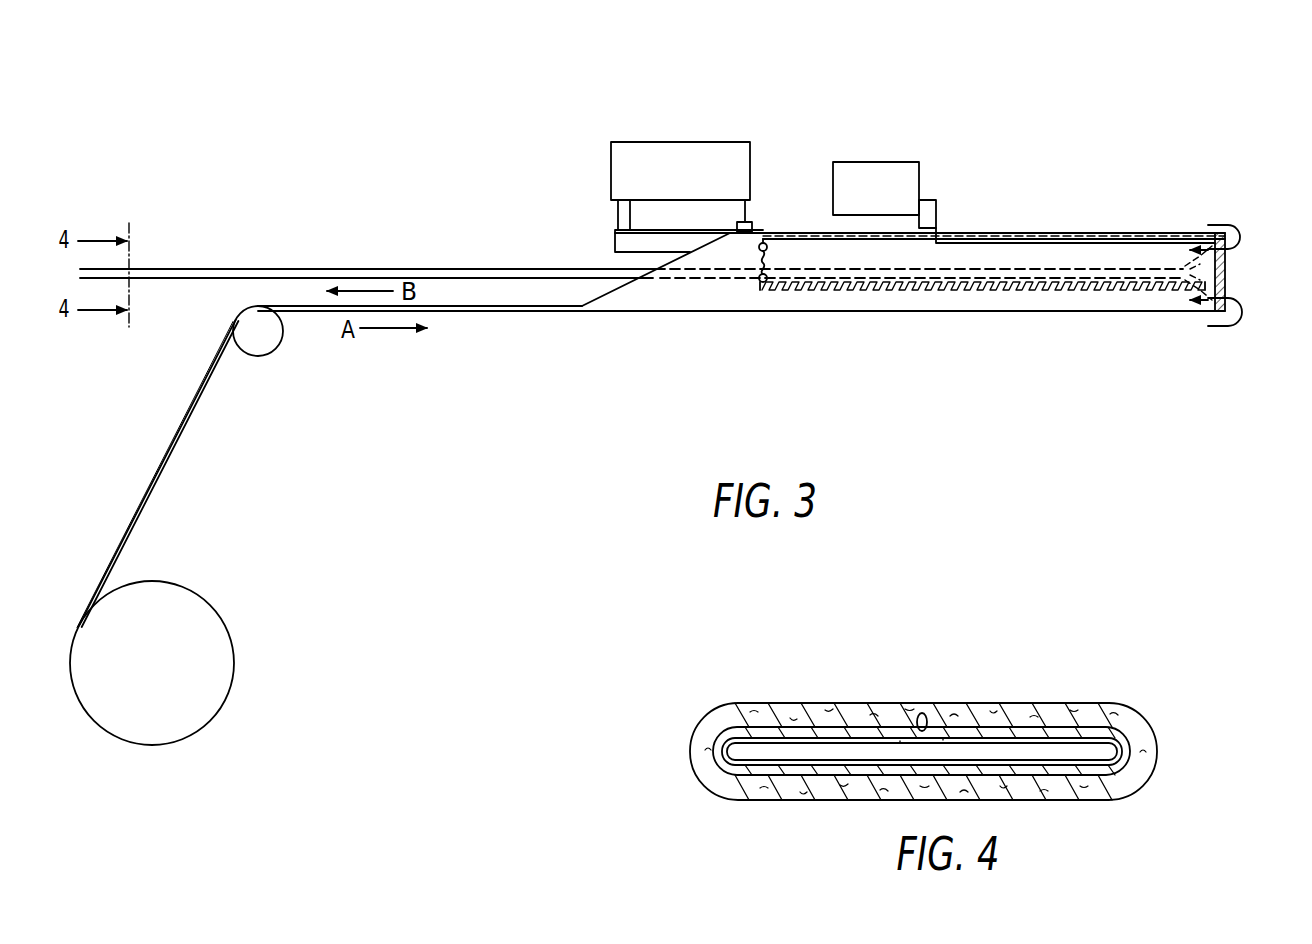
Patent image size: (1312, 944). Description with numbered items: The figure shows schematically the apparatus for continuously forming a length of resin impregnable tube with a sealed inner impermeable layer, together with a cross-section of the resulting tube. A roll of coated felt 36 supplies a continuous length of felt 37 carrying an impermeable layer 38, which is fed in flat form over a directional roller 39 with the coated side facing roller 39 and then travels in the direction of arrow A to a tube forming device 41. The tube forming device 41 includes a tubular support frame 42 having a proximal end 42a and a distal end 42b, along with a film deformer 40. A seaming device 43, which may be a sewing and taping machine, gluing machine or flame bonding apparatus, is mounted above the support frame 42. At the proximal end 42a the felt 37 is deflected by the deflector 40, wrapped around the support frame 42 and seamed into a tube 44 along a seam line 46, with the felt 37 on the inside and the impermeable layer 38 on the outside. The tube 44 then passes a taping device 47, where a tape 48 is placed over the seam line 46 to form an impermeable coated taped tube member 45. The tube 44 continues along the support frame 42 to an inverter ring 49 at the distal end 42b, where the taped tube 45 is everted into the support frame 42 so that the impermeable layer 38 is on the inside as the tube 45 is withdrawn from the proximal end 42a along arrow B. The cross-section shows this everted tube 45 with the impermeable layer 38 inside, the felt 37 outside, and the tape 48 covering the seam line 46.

In FIG. 3, the roll of coated felt 36 is at (223, 645).
In FIG. 3, the felt 37 is at (143, 495).
In FIG. 4, the felt 37 is at (1145, 722).
In FIG. 3, the impermeable layer 38 is at (175, 448).
In FIG. 4, the impermeable layer 38 is at (1017, 740).
In FIG. 3, the directional roller 39 is at (265, 343).
In FIG. 3, the film deformer 40 is at (610, 293).
In FIG. 3, the tube forming device 41 is at (962, 176).
In FIG. 3, the tubular support frame 42 is at (813, 292).
In FIG. 3, the proximal end 42a is at (762, 281).
In FIG. 3, the distal end 42b is at (1210, 292).
In FIG. 3, the seaming device 43 is at (630, 142).
In FIG. 3, the tube 44 is at (482, 272).
In FIG. 3, the impermeable coated taped tube member 45 is at (180, 268).
In FIG. 4, the impermeable coated taped tube member 45 is at (847, 703).
In FIG. 3, the seam line 46 is at (768, 233).
In FIG. 4, the seam line 46 is at (918, 716).
In FIG. 3, the taping device 47 is at (888, 162).
In FIG. 3, the tape 48 is at (1122, 233).
In FIG. 4, the tape 48 is at (945, 738).
In FIG. 3, the inverter ring 49 is at (1227, 272).